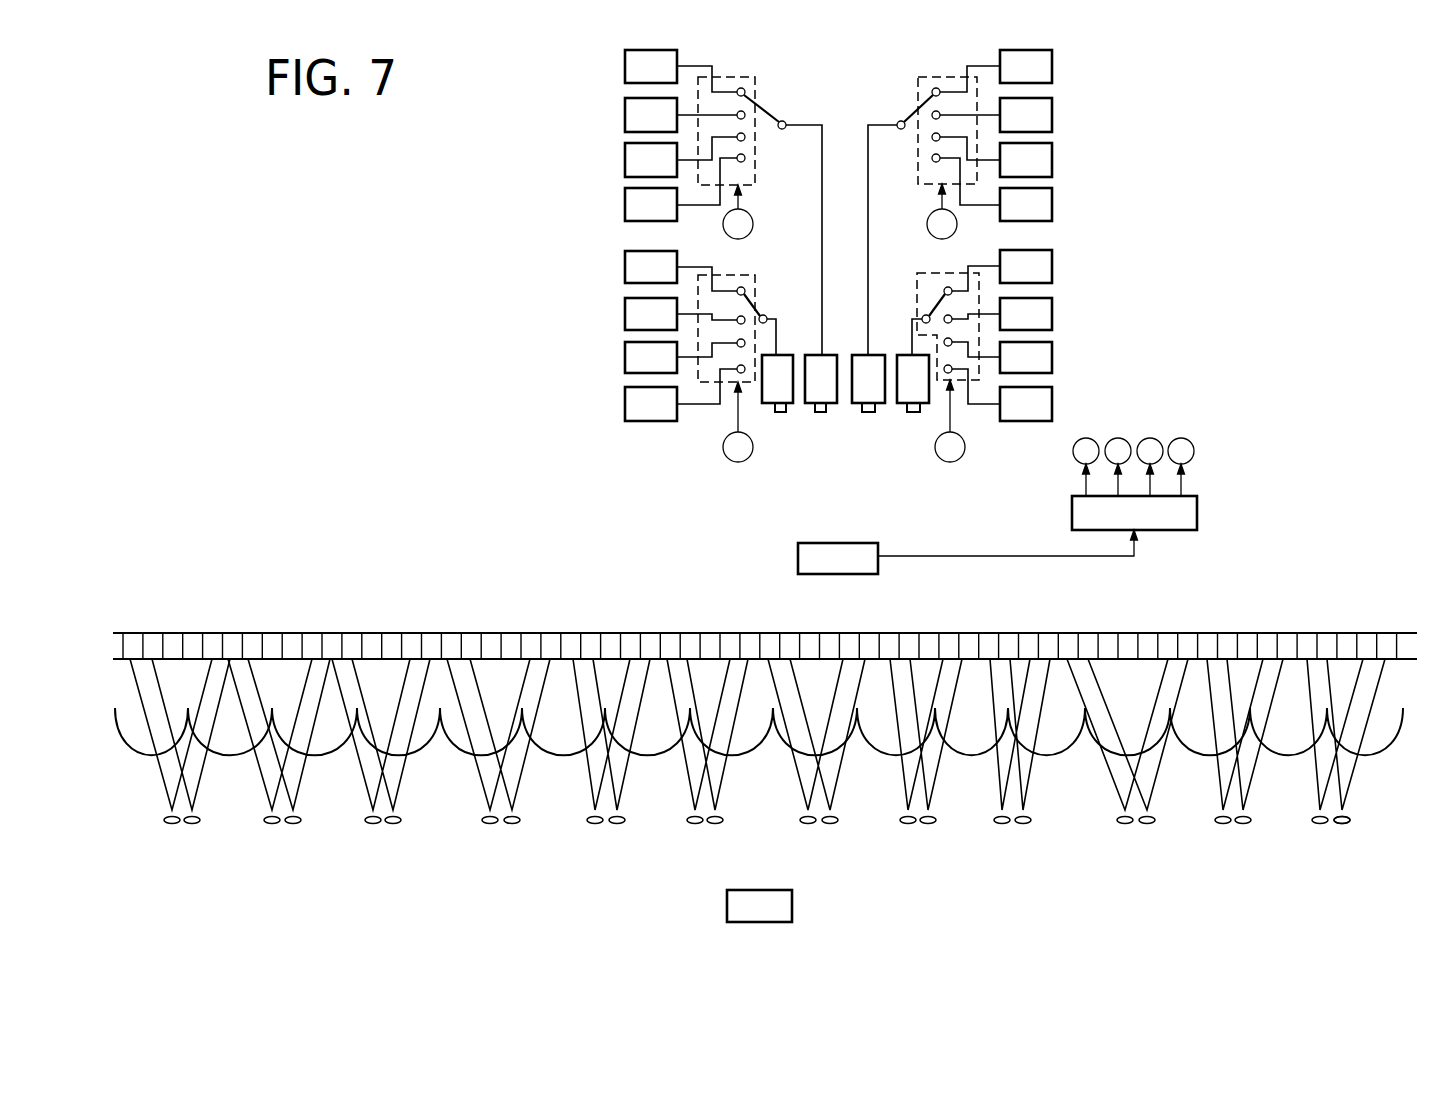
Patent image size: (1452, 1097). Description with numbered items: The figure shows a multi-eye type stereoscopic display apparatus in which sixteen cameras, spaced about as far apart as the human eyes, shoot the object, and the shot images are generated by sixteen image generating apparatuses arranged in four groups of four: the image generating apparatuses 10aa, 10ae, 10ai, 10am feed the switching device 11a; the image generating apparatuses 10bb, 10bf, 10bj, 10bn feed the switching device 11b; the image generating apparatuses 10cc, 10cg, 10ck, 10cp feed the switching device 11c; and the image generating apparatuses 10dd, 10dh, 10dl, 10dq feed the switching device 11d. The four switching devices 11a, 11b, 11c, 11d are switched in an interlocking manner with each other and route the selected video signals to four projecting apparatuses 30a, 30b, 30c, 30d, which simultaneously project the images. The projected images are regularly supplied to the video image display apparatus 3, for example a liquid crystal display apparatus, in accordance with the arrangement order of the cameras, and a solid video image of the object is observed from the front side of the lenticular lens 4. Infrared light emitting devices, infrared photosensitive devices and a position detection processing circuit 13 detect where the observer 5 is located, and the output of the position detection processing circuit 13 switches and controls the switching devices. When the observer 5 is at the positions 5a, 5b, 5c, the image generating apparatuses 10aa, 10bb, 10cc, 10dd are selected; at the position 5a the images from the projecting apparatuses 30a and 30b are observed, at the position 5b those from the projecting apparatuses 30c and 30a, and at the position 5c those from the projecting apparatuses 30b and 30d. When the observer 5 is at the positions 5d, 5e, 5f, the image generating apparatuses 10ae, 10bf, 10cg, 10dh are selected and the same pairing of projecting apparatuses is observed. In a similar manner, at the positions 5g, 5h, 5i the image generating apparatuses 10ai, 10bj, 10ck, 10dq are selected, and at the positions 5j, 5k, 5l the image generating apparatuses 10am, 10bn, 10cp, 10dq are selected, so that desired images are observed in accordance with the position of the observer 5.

The image generating apparatus 10aa is at (625, 66).
The image generating apparatus 10ae is at (625, 115).
The image generating apparatus 10ai is at (625, 160).
The image generating apparatus 10am is at (625, 204).
The image generating apparatus 10bb is at (1052, 66).
The image generating apparatus 10bf is at (1052, 115).
The image generating apparatus 10bj is at (1052, 160).
The image generating apparatus 10bn is at (1052, 204).
The image generating apparatus 10cc is at (625, 267).
The image generating apparatus 10cg is at (625, 314).
The image generating apparatus 10ck is at (625, 357).
The image generating apparatus 10cp is at (625, 404).
The image generating apparatus 10dd is at (1052, 266).
The image generating apparatus 10dh is at (1052, 314).
The image generating apparatus 10dl is at (1052, 357).
The image generating apparatus 10dq is at (1052, 404).
The switching device 11a is at (741, 77).
The switching device 11b is at (932, 77).
The switching device 11c is at (742, 275).
The switching device 11d is at (946, 273).
The projecting apparatus 30a is at (820, 412).
The projecting apparatus 30b is at (868, 412).
The projecting apparatus 30c is at (778, 412).
The projecting apparatus 30d is at (902, 412).
The position detection processing circuit 13 is at (1197, 508).
The video image display apparatus 3 is at (1407, 642).
The lenticular lens 4 is at (1400, 722).
The observer 5 is at (1352, 814).
The observer position 5a is at (279, 761).
The observer position 5b is at (180, 761).
The observer position 5c is at (381, 761).
The observer position 5d is at (611, 761).
The observer position 5e is at (498, 761).
The observer position 5f is at (707, 761).
The observer position 5g is at (926, 761).
The observer position 5h is at (816, 761).
The observer position 5i is at (1020, 761).
The observer position 5j is at (1245, 761).
The observer position 5k is at (1127, 761).
The observer position 5l is at (1346, 761).